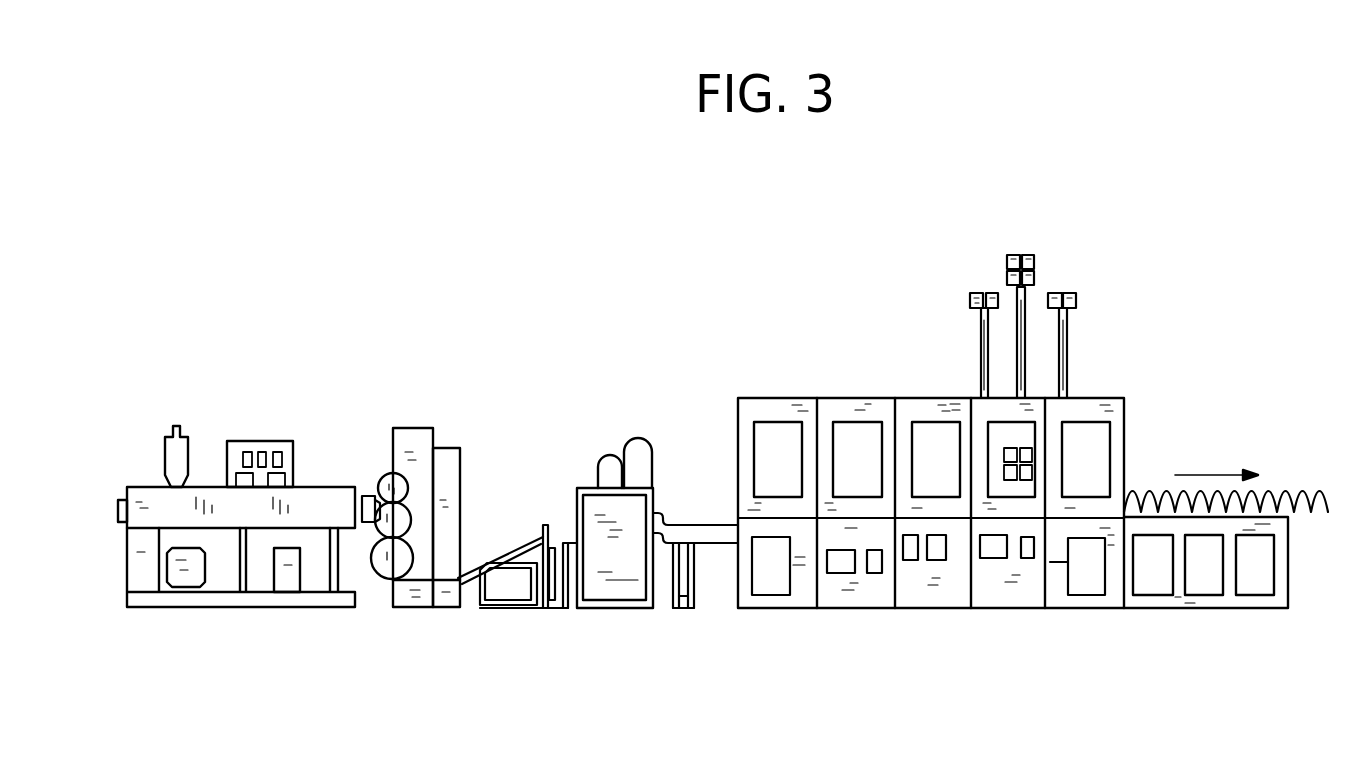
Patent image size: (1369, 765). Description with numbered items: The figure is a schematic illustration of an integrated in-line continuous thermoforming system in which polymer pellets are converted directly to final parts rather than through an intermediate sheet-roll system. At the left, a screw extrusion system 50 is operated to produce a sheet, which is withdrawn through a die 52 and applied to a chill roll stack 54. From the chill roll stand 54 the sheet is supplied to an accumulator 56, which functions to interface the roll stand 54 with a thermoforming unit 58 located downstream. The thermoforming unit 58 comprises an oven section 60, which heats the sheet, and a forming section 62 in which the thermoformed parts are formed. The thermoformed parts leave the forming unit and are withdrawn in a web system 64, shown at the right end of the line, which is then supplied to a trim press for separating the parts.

The screw extrusion system 50 is at (213, 625).
The die 52 is at (363, 495).
The chill roll stack 54 is at (432, 628).
The accumulator 56 is at (621, 445).
The thermoforming unit 58 is at (850, 362).
The oven section 60 is at (860, 612).
The forming section 62 is at (1023, 253).
The web system 64 is at (1308, 495).